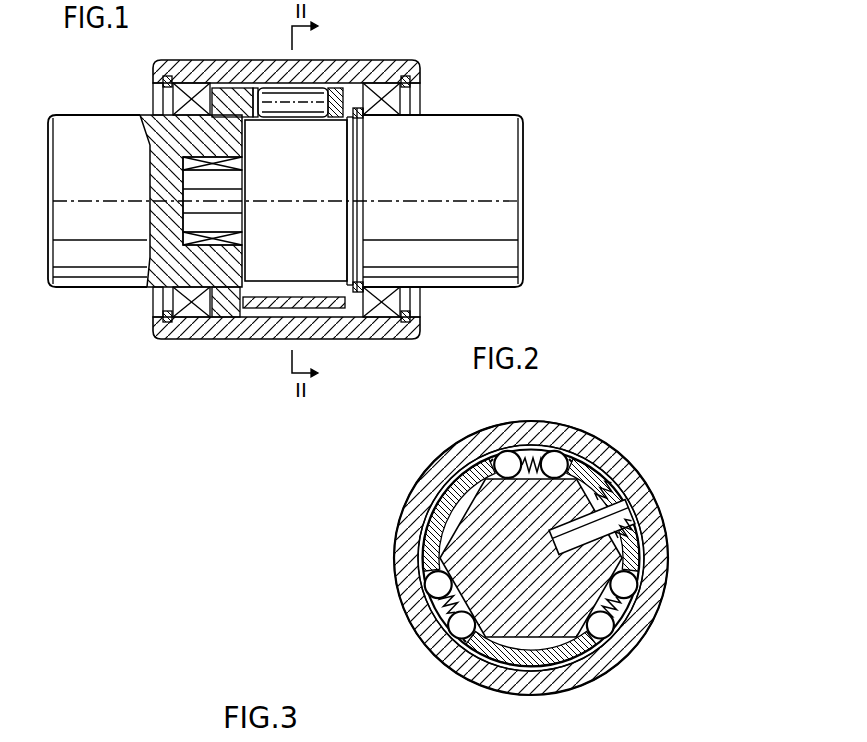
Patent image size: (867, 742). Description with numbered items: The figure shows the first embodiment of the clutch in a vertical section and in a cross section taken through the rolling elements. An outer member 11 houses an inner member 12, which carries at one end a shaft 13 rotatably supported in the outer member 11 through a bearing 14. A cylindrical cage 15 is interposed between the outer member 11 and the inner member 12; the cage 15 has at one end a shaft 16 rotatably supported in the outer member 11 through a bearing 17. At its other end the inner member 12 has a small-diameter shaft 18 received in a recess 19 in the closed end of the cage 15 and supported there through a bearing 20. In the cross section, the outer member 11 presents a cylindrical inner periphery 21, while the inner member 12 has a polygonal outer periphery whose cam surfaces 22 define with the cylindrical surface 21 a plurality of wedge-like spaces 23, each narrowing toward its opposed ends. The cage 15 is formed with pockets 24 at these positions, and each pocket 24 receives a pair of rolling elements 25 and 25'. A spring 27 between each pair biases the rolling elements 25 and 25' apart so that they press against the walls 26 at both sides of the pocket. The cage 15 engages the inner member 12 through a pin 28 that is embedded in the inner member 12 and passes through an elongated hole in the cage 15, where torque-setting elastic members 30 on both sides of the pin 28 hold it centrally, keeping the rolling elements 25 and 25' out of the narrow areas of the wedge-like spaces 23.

In FIG. 1, the outer member 11 is at (187, 67).
In FIG. 2, the outer member 11 is at (405, 522).
In FIG. 1, the inner member 12 is at (363, 90).
In FIG. 2, the inner member 12 is at (470, 528).
In FIG. 1, the shaft 13 is at (488, 122).
In FIG. 1, the bearing 14 is at (393, 100).
In FIG. 1, the cylindrical cage 15 is at (330, 305).
In FIG. 2, the cylindrical cage 15 is at (458, 483).
In FIG. 1, the shaft 16 is at (87, 125).
In FIG. 1, the bearing 17 is at (177, 97).
In FIG. 1, the small-diameter shaft 18 is at (200, 212).
In FIG. 1, the recess 19 is at (200, 240).
In FIG. 1, the bearing 20 is at (233, 243).
In FIG. 1, the inner periphery 21 is at (280, 105).
In FIG. 2, the inner periphery 21 is at (630, 607).
In FIG. 1, the cam surfaces 22 is at (277, 85).
In FIG. 2, the cam surfaces 22 is at (440, 563).
In FIG. 2, the wedge-like spaces 23 is at (435, 578).
In FIG. 1, the pockets 24 is at (320, 150).
In FIG. 1, the rolling element 25 is at (308, 66).
In FIG. 2, the rolling element 25 is at (519, 538).
In FIG. 2, the rolling element 25' is at (478, 503).
In FIG. 2, the walls 26 is at (495, 462).
In FIG. 2, the spring 27 is at (532, 452).
In FIG. 2, the pin 28 is at (630, 505).
In FIG. 2, the torque-setting elastic members 30 is at (620, 490).